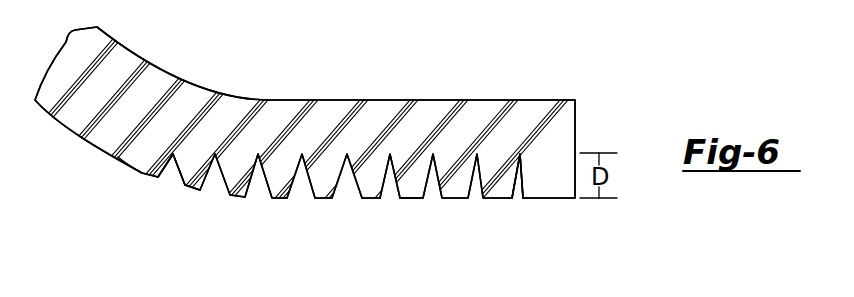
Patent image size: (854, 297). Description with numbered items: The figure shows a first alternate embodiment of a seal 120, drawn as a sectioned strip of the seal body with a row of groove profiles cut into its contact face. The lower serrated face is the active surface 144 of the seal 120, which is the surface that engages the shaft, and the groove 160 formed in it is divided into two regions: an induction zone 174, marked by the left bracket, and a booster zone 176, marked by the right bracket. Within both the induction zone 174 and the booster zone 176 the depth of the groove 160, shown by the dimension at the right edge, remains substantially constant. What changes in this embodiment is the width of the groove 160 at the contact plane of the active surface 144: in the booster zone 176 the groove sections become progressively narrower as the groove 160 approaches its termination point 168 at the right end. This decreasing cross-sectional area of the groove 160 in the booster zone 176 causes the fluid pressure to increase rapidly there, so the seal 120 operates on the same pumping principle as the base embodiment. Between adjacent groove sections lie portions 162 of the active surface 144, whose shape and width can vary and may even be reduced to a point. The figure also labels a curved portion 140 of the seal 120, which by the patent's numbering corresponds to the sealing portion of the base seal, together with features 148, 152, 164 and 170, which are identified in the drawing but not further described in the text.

The seal 120 is at (526, 56).
The curved portion 140 is at (125, 60).
The top surface 148 is at (356, 95).
The end edge 152 is at (575, 120).
The shoulder 164 is at (139, 181).
The active surface 144 is at (191, 190).
The induction zone 174 is at (353, 215).
The groove 160 is at (370, 203).
The portion of active surface 162 is at (413, 200).
The booster zone 176 is at (517, 215).
The termination point 168 is at (525, 208).
The bottom edge 170 is at (557, 200).